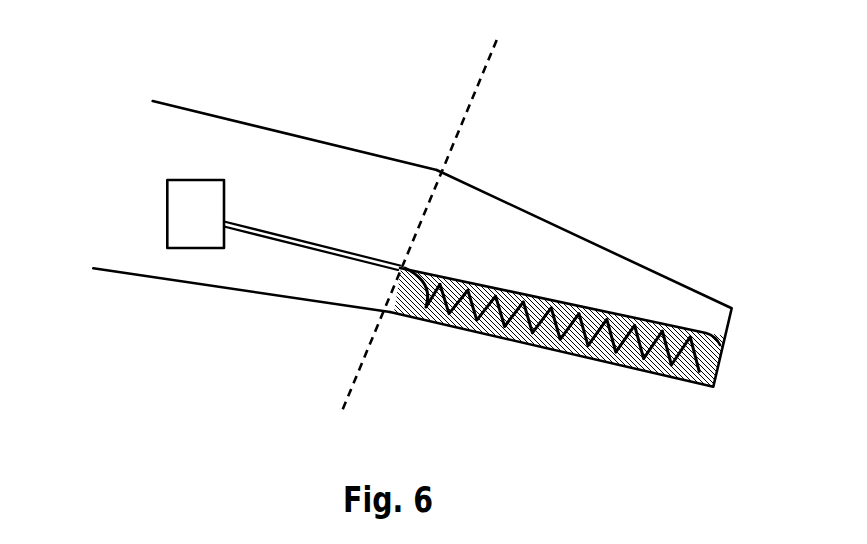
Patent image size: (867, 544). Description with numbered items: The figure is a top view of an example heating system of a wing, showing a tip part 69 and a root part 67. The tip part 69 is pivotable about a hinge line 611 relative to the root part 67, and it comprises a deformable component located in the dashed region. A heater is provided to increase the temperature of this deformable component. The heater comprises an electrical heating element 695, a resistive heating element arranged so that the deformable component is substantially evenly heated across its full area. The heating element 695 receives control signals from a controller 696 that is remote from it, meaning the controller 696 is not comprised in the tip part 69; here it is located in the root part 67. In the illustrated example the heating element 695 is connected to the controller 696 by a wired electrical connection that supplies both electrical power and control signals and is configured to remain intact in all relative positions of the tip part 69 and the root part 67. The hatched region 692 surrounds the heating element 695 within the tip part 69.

The root part 67 is at (259, 188).
The tip part 69 is at (467, 254).
The hinge line 611 is at (472, 100).
The sealing filler material 692 is at (523, 343).
The electrical heating element 695 is at (582, 302).
The controller 696 is at (176, 227).